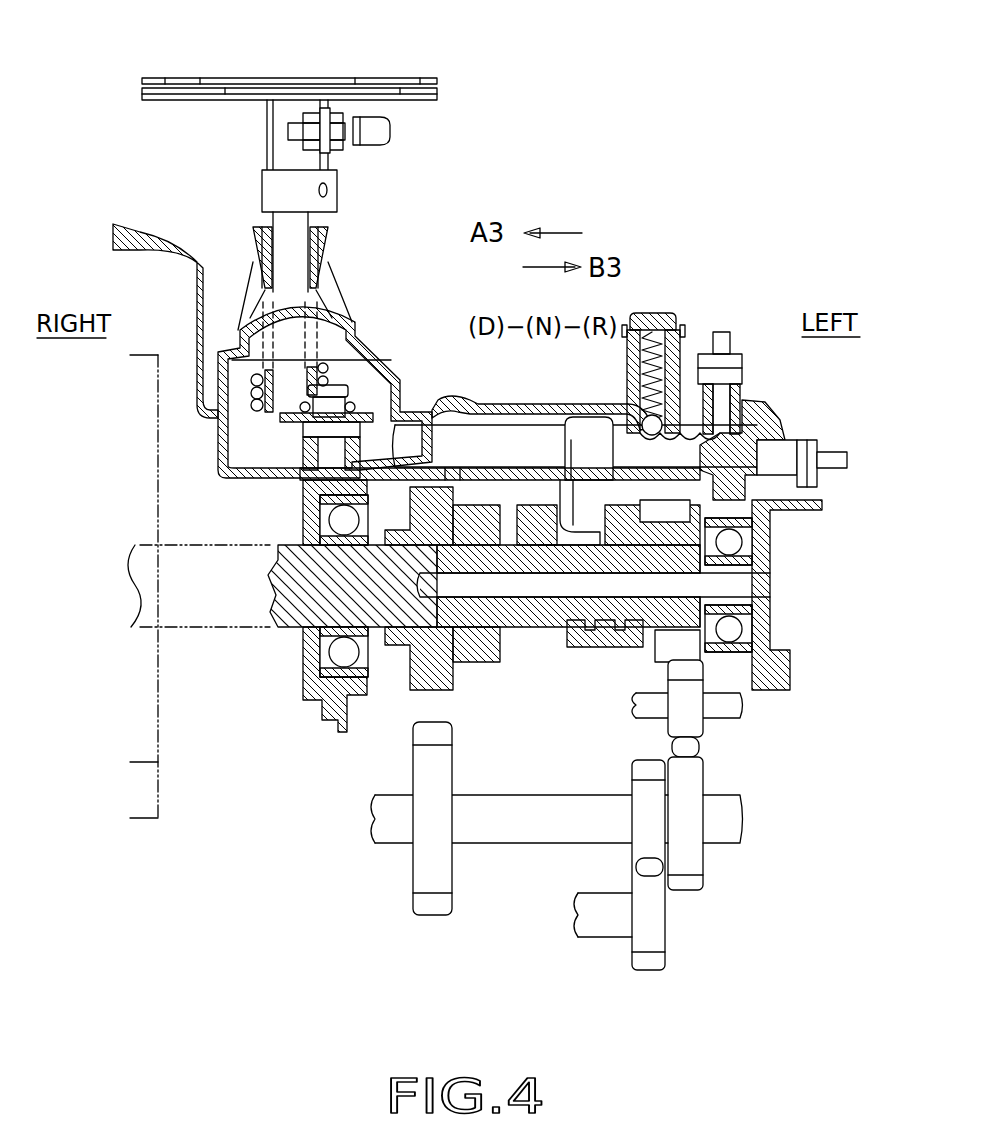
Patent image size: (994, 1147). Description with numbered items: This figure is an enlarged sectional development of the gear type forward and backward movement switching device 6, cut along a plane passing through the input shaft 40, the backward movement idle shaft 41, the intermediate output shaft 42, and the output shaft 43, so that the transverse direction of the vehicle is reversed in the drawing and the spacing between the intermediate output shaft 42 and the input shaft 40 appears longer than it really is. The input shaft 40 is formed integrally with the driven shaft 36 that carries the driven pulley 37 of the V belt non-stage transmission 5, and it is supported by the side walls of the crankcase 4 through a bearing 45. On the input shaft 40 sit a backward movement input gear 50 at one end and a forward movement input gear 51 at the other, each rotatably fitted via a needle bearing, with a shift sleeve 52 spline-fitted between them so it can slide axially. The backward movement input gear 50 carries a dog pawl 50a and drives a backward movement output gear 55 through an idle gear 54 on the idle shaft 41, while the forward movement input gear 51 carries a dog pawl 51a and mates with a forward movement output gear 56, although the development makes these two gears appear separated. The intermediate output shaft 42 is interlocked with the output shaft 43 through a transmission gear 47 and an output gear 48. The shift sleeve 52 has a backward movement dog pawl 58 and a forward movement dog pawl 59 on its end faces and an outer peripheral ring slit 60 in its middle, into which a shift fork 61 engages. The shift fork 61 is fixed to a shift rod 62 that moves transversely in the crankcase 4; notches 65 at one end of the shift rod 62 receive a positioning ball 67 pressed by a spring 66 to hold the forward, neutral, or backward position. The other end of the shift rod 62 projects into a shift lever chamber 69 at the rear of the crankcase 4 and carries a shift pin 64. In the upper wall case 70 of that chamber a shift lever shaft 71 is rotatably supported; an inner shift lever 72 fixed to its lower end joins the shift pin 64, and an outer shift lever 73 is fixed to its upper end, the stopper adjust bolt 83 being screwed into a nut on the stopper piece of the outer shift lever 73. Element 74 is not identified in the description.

The outer shift lever 73 is at (215, 78).
The stopper adjust bolt 83 is at (356, 146).
The shift lever shaft 71 is at (285, 222).
The upper wall case 70 is at (338, 282).
The shift lever chamber 69 is at (237, 372).
The detent balls 74 is at (253, 405).
The shift pin 64 is at (336, 410).
The inner shift lever 72 is at (300, 419).
The shift rod 62 is at (455, 440).
The shift fork 61 is at (580, 432).
The spring 66 is at (652, 326).
The positioning ball 67 is at (642, 420).
The notches 65 is at (690, 405).
The forward movement dog pawl 59 is at (540, 545).
The backward movement dog pawl 58 is at (622, 545).
The shift sleeve 52 is at (555, 650).
The outer peripheral ring slit 60 is at (590, 650).
The dog pawl 51a is at (520, 658).
The dog pawl 50a is at (656, 647).
The input shaft 40 is at (293, 604).
The forward movement input gear 51 is at (450, 692).
The crankcase 4 is at (320, 700).
The bearing 45 is at (338, 658).
The backward movement input gear 50 is at (688, 512).
The driven shaft 36 is at (130, 634).
The driven pulley 37 is at (160, 790).
The V belt non-stage transmission 5 is at (136, 832).
The forward and backward movement switching device 6 is at (405, 710).
The backward movement idle shaft 41 is at (745, 702).
The idle gear 54 is at (703, 728).
The backward movement output gear 55 is at (703, 890).
The intermediate output shaft 42 is at (510, 845).
The forward movement output gear 56 is at (415, 868).
The output gear 48 is at (665, 962).
The transmission gear 47 is at (635, 852).
The output shaft 43 is at (600, 932).